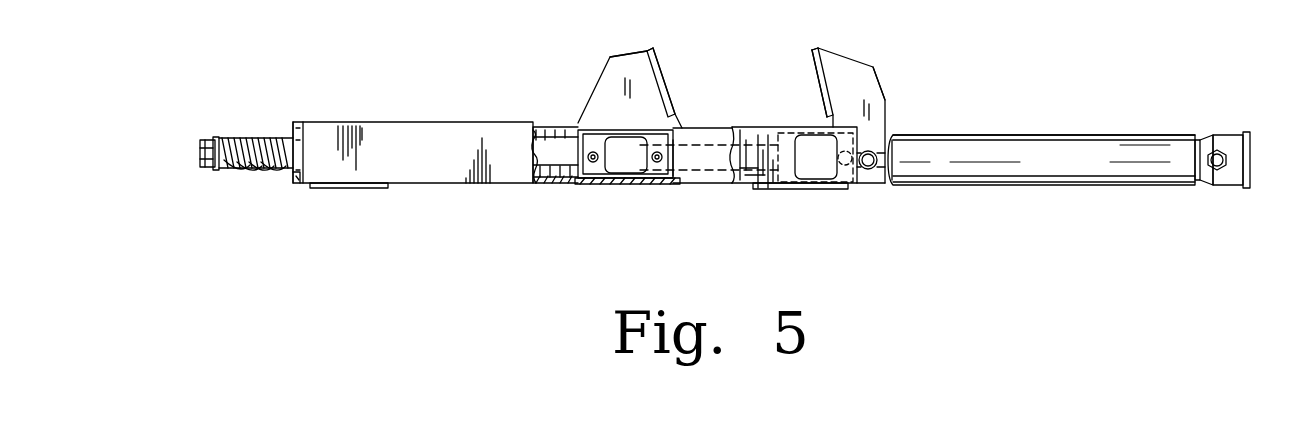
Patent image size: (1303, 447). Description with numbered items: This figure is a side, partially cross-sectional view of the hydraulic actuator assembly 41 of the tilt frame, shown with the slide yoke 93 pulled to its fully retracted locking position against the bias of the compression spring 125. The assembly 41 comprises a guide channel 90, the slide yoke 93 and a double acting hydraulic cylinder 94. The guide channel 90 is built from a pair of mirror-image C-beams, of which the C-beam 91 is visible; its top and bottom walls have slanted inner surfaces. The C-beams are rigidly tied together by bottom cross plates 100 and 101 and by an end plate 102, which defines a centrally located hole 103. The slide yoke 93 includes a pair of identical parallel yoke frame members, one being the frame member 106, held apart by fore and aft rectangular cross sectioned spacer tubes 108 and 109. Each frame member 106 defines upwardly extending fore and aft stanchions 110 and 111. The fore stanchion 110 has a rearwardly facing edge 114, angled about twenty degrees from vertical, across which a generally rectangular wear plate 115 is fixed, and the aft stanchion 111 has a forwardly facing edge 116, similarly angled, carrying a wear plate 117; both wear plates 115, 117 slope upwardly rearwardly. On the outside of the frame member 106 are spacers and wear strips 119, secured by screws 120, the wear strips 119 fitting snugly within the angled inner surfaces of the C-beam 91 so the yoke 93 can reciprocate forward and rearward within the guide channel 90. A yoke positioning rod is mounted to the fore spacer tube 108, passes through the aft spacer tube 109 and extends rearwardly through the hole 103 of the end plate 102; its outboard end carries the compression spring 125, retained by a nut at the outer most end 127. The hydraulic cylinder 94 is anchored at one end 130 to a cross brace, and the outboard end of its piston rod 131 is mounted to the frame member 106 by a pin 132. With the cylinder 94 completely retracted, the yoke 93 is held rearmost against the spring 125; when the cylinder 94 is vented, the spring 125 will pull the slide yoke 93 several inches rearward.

The hydraulic actuator assembly 41 is at (422, 108).
The guide channel 90 is at (520, 185).
The C-beam 91 is at (428, 180).
The slide yoke 93 is at (905, 116).
The double acting hydraulic cylinder 94 is at (1025, 186).
The bottom cross plate 100 is at (810, 189).
The bottom cross plate 101 is at (347, 190).
The end plate 102 is at (291, 120).
The hole 103 is at (292, 180).
The yoke frame member 106 is at (605, 93).
The fore spacer tube 108 is at (845, 190).
The aft spacer tube 109 is at (677, 185).
The fore stanchion 110 is at (876, 72).
The aft stanchion 111 is at (625, 60).
The rearwardly facing edge 114 is at (812, 52).
The wear plate 115 is at (828, 98).
The forwardly facing edge 116 is at (657, 53).
The wear plate 117 is at (667, 85).
The wear strip 119 is at (593, 187).
The screw 120 is at (673, 146).
The compression spring 125 is at (236, 136).
The outer most end 127 is at (200, 145).
The end 130 is at (1225, 188).
The piston rod 131 is at (903, 147).
The pin 132 is at (872, 170).